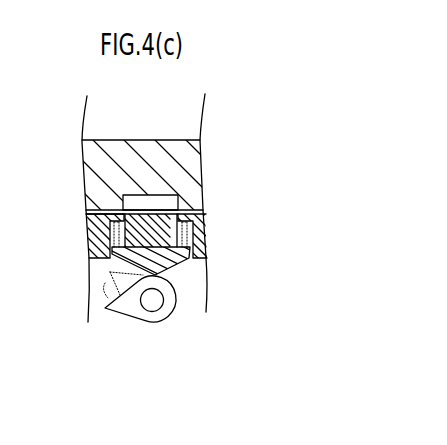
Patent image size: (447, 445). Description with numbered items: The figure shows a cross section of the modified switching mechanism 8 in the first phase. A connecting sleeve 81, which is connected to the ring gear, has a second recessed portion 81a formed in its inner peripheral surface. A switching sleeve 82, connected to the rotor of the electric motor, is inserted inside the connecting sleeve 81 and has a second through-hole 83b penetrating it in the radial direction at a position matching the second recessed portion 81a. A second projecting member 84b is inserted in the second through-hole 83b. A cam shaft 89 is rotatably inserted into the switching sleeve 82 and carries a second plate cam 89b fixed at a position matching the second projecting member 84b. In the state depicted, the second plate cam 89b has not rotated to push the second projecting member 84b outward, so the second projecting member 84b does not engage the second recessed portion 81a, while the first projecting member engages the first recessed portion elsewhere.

The brake unit housing 8 is at (82, 138).
The connecting sleeve 81 is at (157, 150).
The second recessed portion 81a is at (85, 180).
The switching sleeve 82 is at (88, 228).
The second through-hole 83b is at (196, 234).
The second projecting member 84b is at (186, 262).
The cam shaft 89 is at (155, 302).
The second plate cam 89b is at (126, 315).